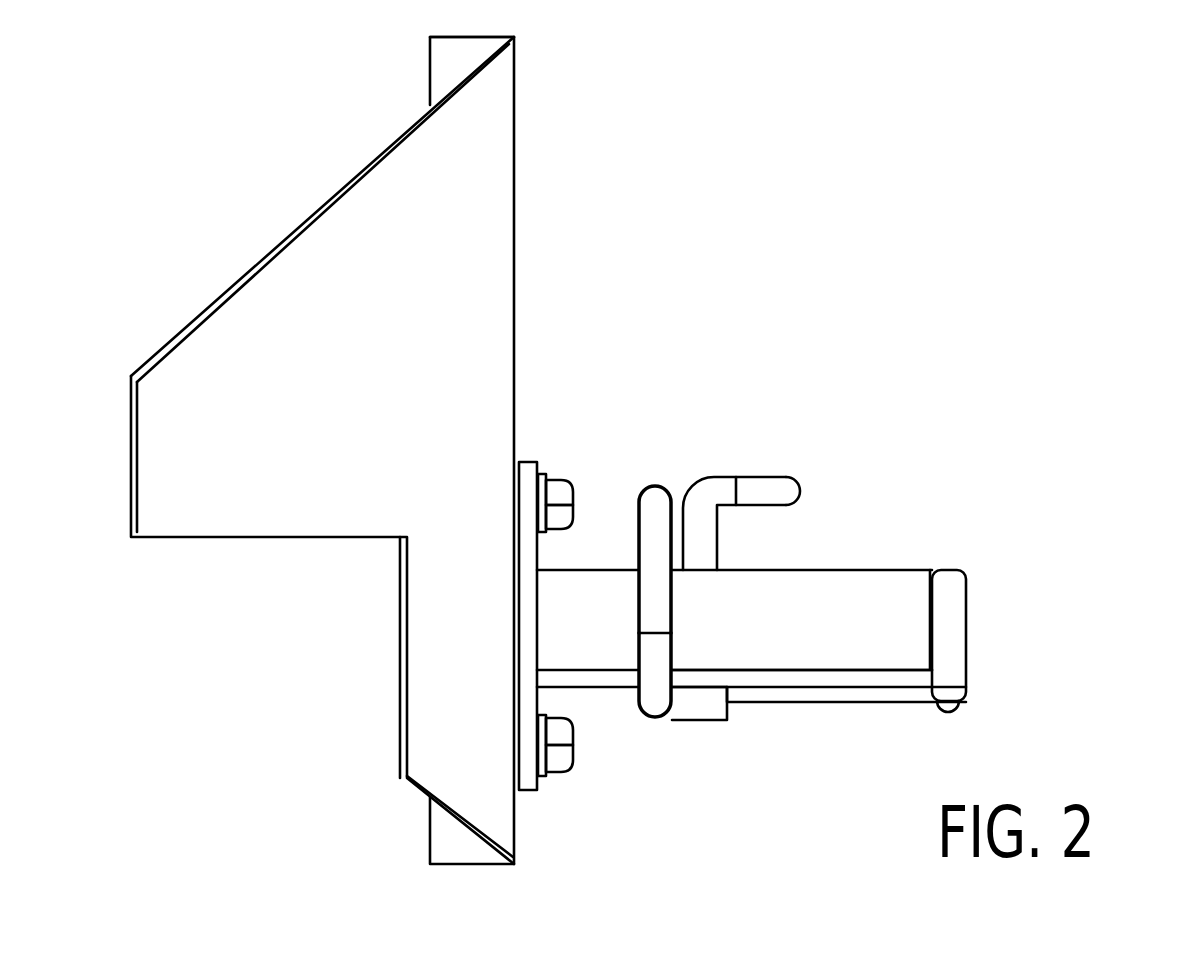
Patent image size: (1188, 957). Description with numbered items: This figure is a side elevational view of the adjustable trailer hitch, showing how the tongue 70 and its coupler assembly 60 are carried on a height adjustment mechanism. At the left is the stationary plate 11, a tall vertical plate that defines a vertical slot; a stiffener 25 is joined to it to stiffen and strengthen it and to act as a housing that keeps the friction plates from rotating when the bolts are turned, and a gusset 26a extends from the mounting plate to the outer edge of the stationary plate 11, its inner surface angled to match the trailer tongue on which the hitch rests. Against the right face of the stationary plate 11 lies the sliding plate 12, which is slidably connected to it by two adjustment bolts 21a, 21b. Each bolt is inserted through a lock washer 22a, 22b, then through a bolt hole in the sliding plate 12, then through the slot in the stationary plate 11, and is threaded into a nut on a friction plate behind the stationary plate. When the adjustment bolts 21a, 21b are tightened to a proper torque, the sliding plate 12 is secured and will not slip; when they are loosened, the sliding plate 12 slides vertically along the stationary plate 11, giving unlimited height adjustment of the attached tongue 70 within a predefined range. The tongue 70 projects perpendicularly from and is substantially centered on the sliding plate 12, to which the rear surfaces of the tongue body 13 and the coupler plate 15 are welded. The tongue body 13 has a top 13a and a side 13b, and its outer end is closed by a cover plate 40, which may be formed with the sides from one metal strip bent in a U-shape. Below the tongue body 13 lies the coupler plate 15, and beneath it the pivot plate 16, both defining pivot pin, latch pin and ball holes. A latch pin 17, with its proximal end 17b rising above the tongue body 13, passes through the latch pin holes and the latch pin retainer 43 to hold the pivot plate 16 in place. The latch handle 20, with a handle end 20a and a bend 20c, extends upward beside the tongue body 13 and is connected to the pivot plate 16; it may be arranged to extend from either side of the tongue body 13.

The stationary plate 11 is at (516, 96).
The stiffener 25 is at (442, 66).
The gusset 26a is at (322, 450).
The sliding plate 12 is at (527, 463).
The lock washer 22a is at (546, 476).
The lock washer 22b is at (543, 777).
The adjustment bolt 21a is at (572, 489).
The adjustment bolt 21b is at (573, 749).
The tongue body 13 is at (804, 572).
The top 13a is at (756, 568).
The side 13b is at (868, 566).
The cover plate 40 is at (951, 622).
The coupler plate 15 is at (953, 681).
The pivot plate 16 is at (953, 694).
The latch pin retainer 43 is at (707, 708).
The latch handle 20 is at (522, 663).
The handle end 20a is at (655, 523).
The bend 20c is at (655, 704).
The latch pin 17 is at (794, 498).
The proximal end 17b is at (783, 489).
The coupler assembly 60 is at (750, 777).
The tongue 70 is at (984, 442).